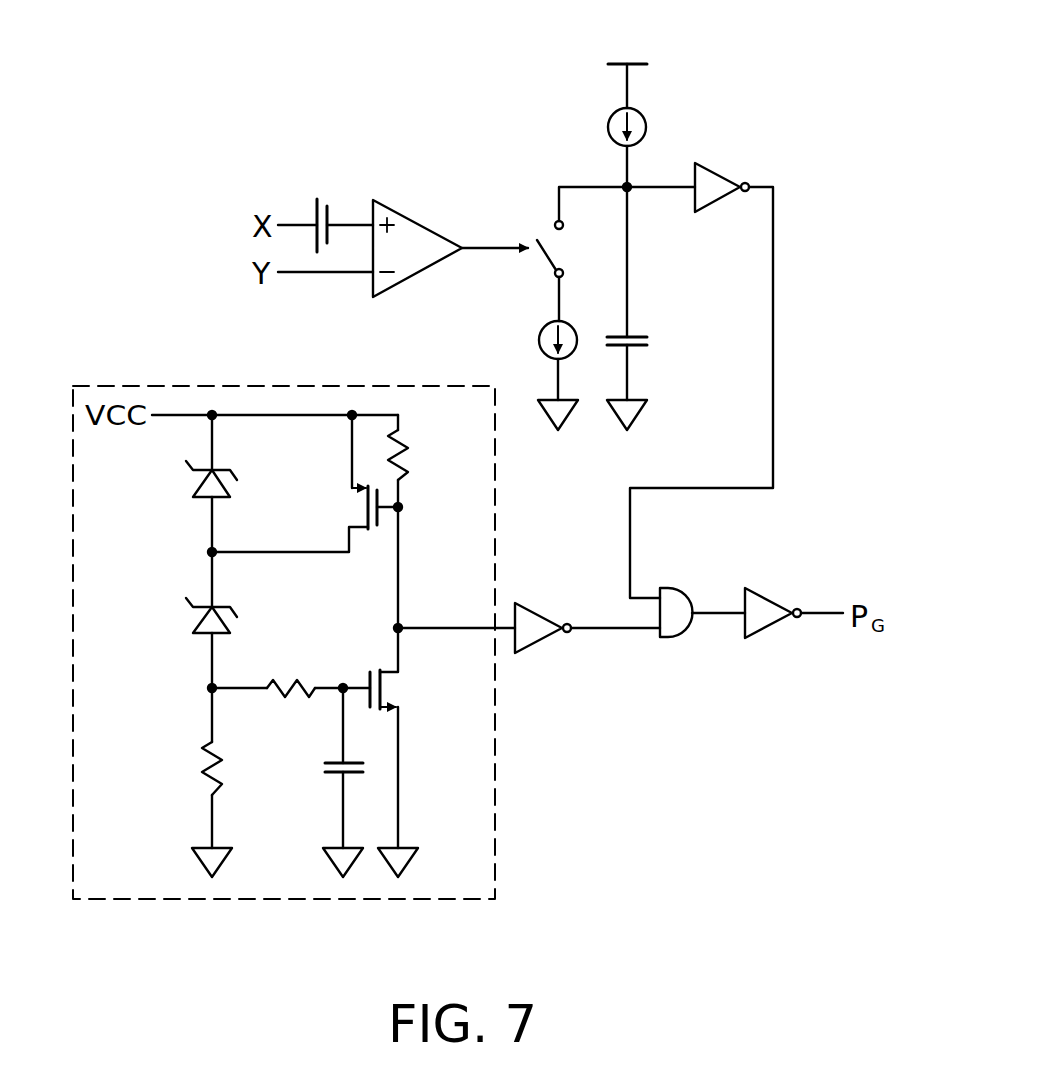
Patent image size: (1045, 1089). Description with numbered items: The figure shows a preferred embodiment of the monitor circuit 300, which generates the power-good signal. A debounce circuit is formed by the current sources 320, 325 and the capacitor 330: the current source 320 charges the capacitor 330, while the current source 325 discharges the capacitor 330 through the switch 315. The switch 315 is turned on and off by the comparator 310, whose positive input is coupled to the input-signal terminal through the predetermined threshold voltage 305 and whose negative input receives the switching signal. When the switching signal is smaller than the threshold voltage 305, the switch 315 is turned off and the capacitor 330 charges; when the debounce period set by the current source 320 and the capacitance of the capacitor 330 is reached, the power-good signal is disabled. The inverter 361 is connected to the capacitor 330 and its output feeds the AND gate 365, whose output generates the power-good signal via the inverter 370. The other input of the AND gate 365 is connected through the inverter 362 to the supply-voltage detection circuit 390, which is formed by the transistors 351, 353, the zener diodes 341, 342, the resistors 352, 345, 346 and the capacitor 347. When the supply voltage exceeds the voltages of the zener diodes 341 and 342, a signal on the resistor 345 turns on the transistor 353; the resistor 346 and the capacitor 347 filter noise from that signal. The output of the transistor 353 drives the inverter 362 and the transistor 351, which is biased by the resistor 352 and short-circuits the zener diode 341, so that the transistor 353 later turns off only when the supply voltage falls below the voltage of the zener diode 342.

The monitor circuit 300 is at (876, 39).
The threshold voltage 305 is at (318, 195).
The comparator 310 is at (420, 218).
The switch 315 is at (548, 225).
The current source 320 is at (607, 127).
The current source 325 is at (537, 340).
The capacitor 330 is at (649, 341).
The zener diode 341 is at (191, 478).
The zener diode 342 is at (191, 616).
The resistor 345 is at (197, 772).
The resistor 346 is at (283, 678).
The capacitor 347 is at (323, 768).
The transistor 351 is at (358, 506).
The resistor 352 is at (410, 455).
The transistor 353 is at (396, 690).
The inverter 361 is at (720, 170).
The inverter 362 is at (540, 613).
The AND gate 365 is at (672, 640).
The inverter 370 is at (768, 600).
The VCC-detection circuit 390 is at (283, 386).